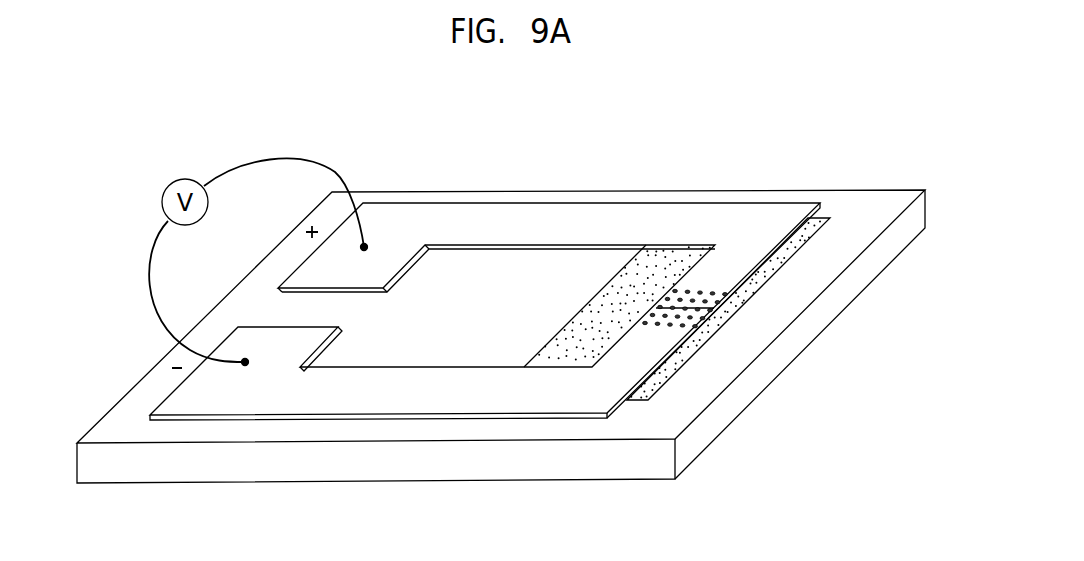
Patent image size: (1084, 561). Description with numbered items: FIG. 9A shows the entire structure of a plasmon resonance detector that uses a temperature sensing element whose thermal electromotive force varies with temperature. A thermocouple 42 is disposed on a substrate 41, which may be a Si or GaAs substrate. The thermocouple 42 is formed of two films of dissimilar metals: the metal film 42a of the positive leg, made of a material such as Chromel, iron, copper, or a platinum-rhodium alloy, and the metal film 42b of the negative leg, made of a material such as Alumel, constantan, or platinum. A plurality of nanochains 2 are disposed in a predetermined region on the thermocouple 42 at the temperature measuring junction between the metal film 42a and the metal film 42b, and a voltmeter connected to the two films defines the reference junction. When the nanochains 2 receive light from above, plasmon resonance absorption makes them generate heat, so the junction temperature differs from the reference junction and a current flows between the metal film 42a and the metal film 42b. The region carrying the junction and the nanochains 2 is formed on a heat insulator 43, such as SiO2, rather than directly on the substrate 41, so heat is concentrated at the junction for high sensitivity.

The nanochains 2 is at (643, 316).
The substrate 41 is at (718, 430).
The thermocouple 42 is at (458, 132).
The metal film of positive leg 42a is at (577, 212).
The metal film of negative leg 42b is at (405, 375).
The heat insulator 43 is at (831, 219).